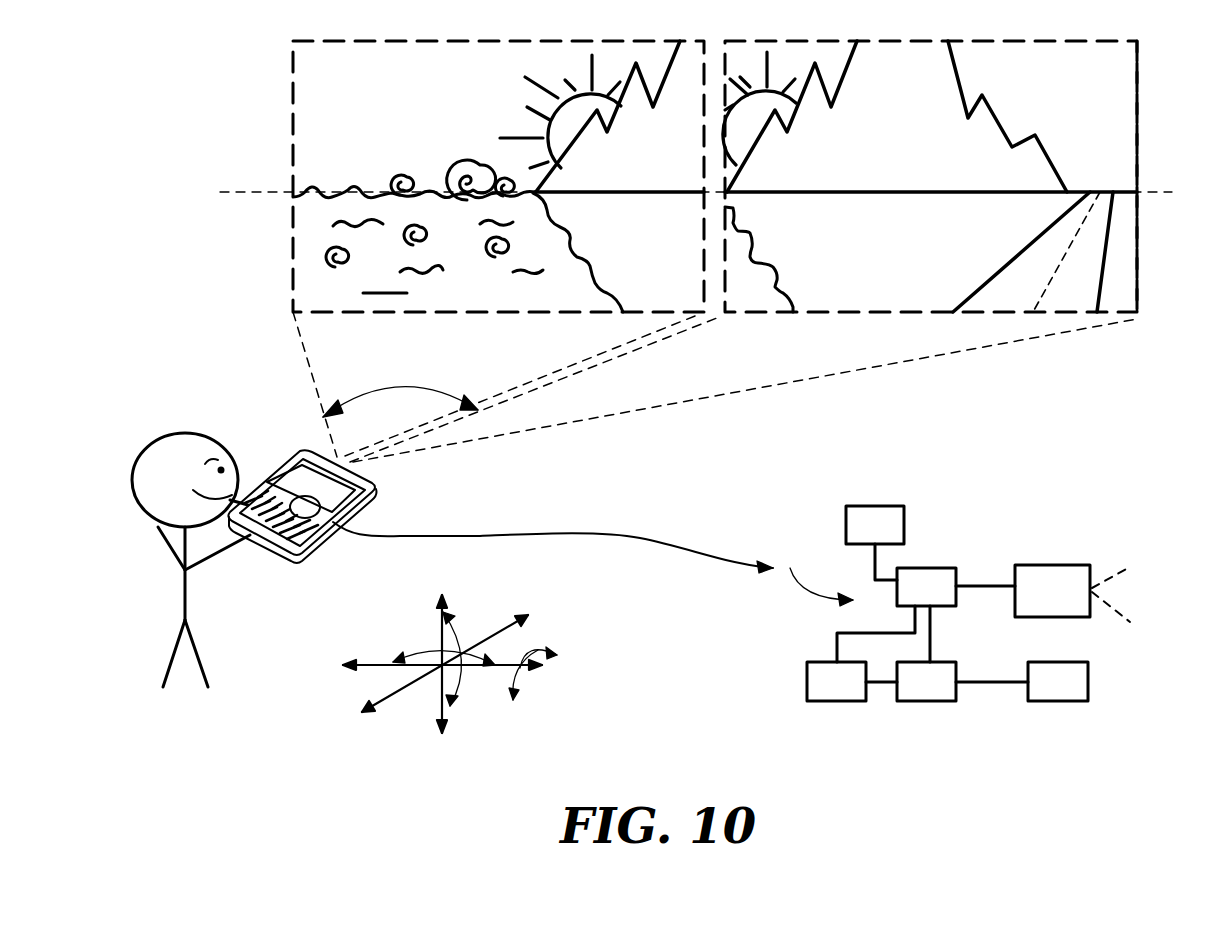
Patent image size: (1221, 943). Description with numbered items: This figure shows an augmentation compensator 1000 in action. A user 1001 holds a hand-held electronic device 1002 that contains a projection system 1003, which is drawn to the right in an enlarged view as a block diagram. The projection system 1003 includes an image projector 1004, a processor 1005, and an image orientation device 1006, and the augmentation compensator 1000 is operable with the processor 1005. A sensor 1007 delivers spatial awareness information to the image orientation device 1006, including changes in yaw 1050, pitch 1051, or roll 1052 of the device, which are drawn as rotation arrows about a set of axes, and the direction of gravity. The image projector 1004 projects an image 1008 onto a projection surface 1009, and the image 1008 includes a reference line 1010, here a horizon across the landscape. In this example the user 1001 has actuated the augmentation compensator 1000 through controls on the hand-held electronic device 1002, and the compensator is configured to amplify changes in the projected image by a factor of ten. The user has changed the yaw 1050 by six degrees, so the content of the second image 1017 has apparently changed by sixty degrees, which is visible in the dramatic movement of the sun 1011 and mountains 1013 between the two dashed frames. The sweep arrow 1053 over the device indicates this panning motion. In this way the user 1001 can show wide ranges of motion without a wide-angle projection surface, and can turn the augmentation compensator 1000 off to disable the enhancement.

The augmentation compensator 1000 is at (872, 524).
The user 1001 is at (187, 583).
The hand-held electronic device 1002 is at (283, 460).
The projection system 1003 is at (815, 575).
The image projector 1004 is at (1052, 588).
The processor 1005 is at (925, 585).
The image orientation device 1006 is at (925, 680).
The sensor 1007 is at (1050, 680).
The projected image 1008 is at (293, 115).
The projection surface 1009 is at (928, 195).
The reference line 1010 is at (262, 190).
The sun 1011 is at (547, 130).
The mountains 1013 is at (836, 117).
The second image 1017 is at (1137, 143).
The yaw 1050 is at (420, 648).
The pitch 1051 is at (462, 630).
The roll 1052 is at (540, 645).
The panning motion 1053 is at (403, 383).